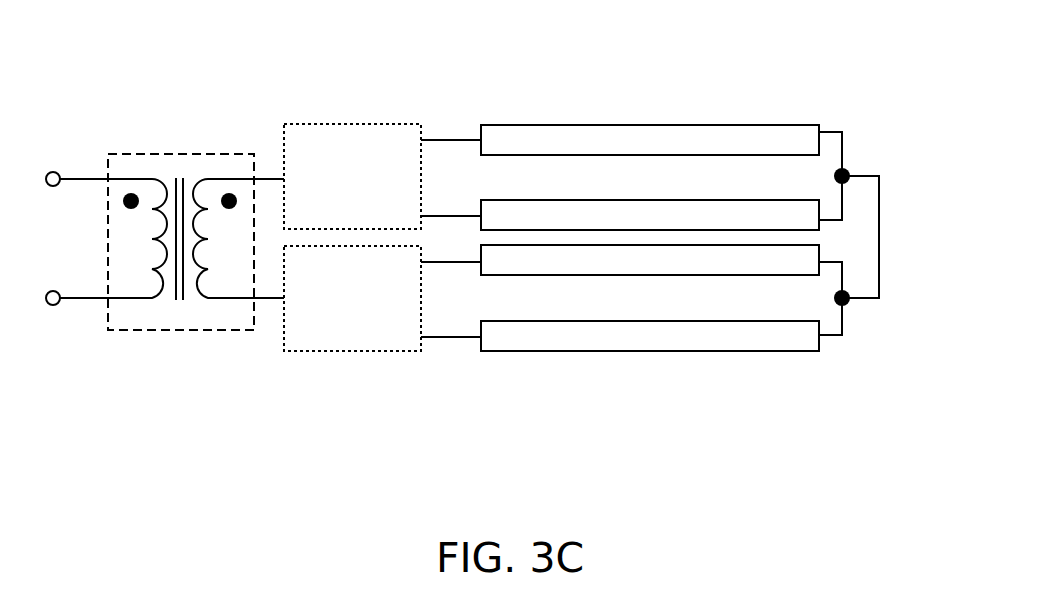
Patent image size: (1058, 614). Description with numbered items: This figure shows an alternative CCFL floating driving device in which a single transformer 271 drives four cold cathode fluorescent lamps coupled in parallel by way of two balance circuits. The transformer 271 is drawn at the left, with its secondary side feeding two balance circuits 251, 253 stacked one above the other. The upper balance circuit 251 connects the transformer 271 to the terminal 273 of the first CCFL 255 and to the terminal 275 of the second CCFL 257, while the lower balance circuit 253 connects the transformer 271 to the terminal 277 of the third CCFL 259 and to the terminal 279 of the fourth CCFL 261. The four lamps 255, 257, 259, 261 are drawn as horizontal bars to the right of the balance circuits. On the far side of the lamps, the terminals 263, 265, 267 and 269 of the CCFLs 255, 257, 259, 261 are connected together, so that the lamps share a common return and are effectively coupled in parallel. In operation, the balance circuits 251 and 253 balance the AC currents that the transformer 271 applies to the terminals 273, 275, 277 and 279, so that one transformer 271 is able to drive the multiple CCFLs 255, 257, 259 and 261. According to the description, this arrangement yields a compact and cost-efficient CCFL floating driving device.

The balance circuit 251 is at (352, 124).
The balance circuit 253 is at (353, 352).
The CCFL 255 is at (721, 123).
The CCFL 257 is at (567, 200).
The CCFL 259 is at (721, 278).
The CCFL 261 is at (578, 352).
The terminal 263 is at (820, 133).
The terminal 265 is at (820, 212).
The terminal 267 is at (822, 262).
The terminal 269 is at (822, 327).
The transformer 271 is at (168, 330).
The terminal 273 is at (478, 139).
The terminal 275 is at (470, 216).
The terminal 277 is at (478, 263).
The terminal 279 is at (477, 345).